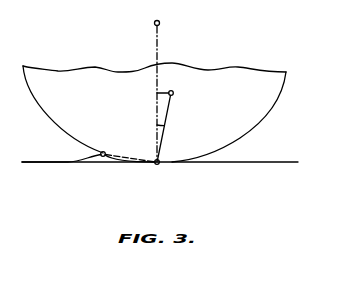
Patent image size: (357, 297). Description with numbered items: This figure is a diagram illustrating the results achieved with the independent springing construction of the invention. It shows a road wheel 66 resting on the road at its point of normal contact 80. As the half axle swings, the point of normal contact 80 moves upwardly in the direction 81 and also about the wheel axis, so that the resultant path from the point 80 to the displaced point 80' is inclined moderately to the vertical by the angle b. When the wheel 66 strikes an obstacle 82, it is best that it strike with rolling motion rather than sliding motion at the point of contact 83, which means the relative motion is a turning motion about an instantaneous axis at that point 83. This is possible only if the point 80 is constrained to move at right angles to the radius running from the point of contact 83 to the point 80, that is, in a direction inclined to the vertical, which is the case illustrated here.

The wheel 66 is at (278, 100).
The point of normal contact 80 is at (166, 177).
The displaced contact point 80' is at (180, 122).
The upward direction 81 is at (156, 51).
The obstacle 82 is at (87, 153).
The point of contact 83 is at (105, 152).
The angle of inclination b is at (165, 125).